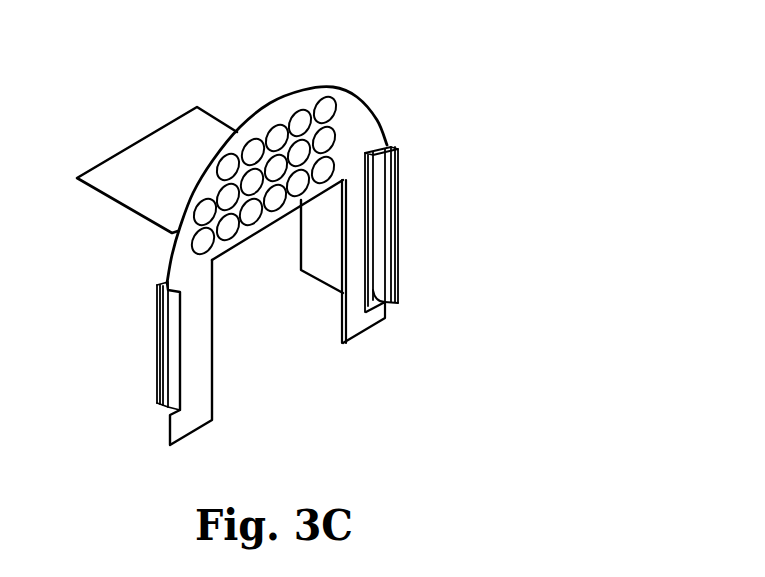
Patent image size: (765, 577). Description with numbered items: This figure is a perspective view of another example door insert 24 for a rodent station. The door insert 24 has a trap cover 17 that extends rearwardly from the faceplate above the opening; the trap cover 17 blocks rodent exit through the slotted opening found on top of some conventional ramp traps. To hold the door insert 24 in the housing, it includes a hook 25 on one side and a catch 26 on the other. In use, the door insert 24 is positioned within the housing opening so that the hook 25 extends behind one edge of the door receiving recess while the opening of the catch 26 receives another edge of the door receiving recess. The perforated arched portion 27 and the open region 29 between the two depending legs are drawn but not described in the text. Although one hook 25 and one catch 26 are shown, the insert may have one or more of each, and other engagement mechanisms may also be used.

The door insert 24 is at (384, 66).
The trap cover 17 is at (162, 153).
The perforated arcuate portion 27 is at (362, 127).
The catch 26 is at (375, 177).
The hook 25 is at (163, 347).
The opening between legs 29 is at (279, 367).